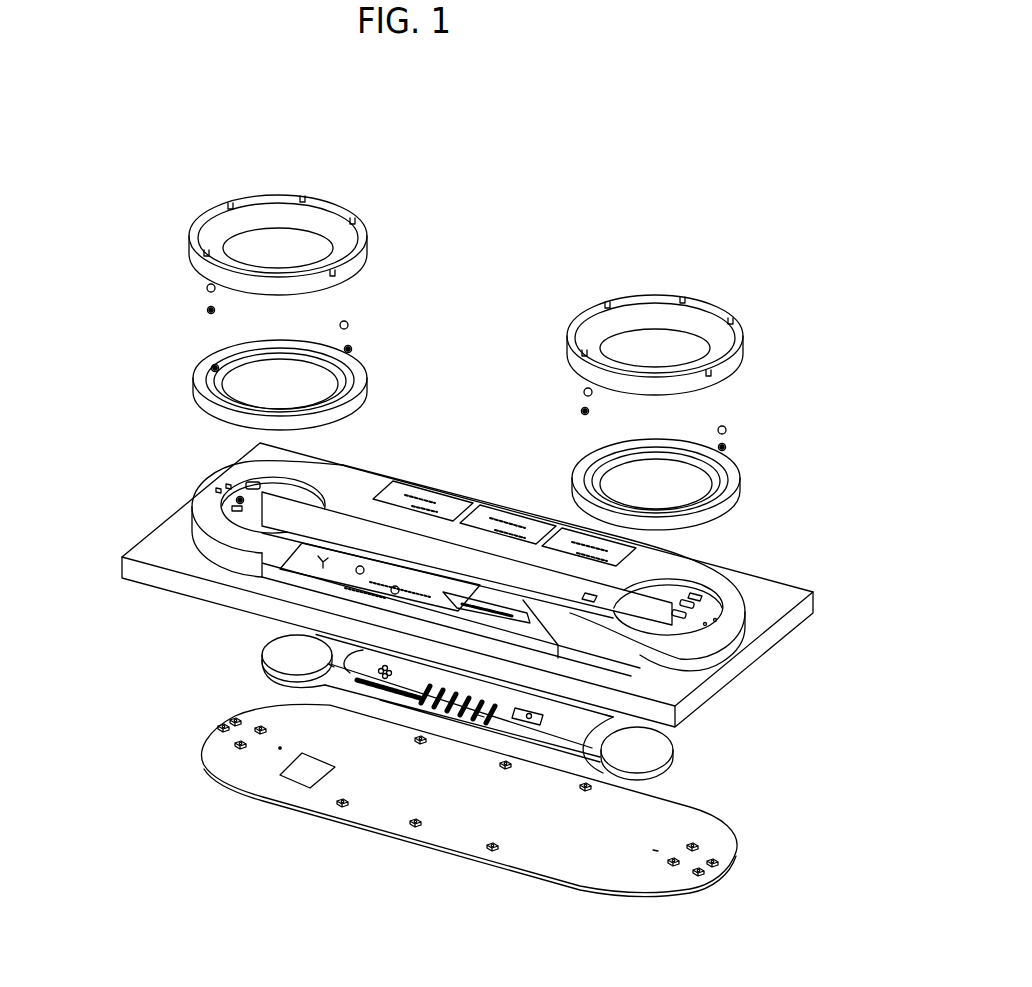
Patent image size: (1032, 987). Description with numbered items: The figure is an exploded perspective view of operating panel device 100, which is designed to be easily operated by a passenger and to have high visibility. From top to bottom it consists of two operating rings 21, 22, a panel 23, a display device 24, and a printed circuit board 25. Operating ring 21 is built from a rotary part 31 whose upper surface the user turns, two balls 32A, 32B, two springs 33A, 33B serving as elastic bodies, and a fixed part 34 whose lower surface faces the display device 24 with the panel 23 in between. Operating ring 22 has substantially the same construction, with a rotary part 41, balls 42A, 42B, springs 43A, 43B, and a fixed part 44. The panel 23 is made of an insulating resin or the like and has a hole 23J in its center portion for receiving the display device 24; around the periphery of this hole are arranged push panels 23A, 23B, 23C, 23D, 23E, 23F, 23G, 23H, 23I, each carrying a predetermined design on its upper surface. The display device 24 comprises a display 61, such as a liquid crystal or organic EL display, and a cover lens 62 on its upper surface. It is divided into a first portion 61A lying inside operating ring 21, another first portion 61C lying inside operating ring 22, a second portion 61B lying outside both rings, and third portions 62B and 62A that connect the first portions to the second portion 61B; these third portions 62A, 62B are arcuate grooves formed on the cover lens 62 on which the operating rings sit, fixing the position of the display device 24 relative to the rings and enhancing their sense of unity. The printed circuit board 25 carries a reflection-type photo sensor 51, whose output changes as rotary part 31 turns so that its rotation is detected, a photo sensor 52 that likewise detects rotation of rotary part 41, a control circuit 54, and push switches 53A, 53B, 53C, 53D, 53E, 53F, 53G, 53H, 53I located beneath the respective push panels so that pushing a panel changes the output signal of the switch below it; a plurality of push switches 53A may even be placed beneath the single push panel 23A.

The operating panel device 100 is at (649, 150).
The operating ring 21 is at (123, 198).
The rotary part 31 is at (212, 234).
The ball 32A is at (207, 288).
The spring 33A is at (206, 310).
The ball 32B is at (340, 326).
The spring 33B is at (300, 354).
The fixed part 34 is at (212, 411).
The operating ring 22 is at (793, 288).
The rotary part 41 is at (722, 328).
The ball 42A is at (593, 392).
The spring 43A is at (590, 411).
The ball 42B is at (727, 430).
The spring 43B is at (727, 449).
The fixed part 44 is at (725, 490).
The panel 23 is at (434, 577).
The push panel 23A is at (356, 560).
The push panel 23B is at (483, 596).
The push panel 23C is at (403, 492).
The push panel 23D is at (480, 503).
The push panel 23E is at (573, 537).
The push panel 23F is at (700, 603).
The push panel 23G is at (687, 615).
The push panel 23H is at (243, 483).
The push panel 23I is at (230, 508).
The hole 23J is at (597, 598).
The display device 24 is at (775, 743).
The display 61 is at (482, 734).
The first portion 61A is at (263, 663).
The second portion 61B is at (615, 718).
The first portion 61C is at (637, 757).
The cover lens 62 is at (432, 712).
The third portion 62A is at (480, 718).
The third portion 62B is at (330, 668).
The printed circuit board 25 is at (469, 835).
The reflection-type photo sensor 51 is at (225, 728).
The photo sensor 52 is at (700, 875).
The push switch 53A is at (415, 826).
The push switch 53B is at (490, 850).
The push switch 53C is at (422, 742).
The push switch 53D is at (505, 768).
The push switch 53E is at (585, 790).
The push switch 53F is at (697, 847).
The push switch 53G is at (676, 865).
The push switch 53H is at (260, 733).
The push switch 53I is at (240, 747).
The control circuit 54 is at (300, 770).